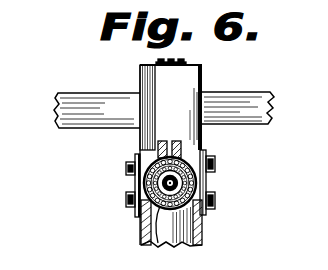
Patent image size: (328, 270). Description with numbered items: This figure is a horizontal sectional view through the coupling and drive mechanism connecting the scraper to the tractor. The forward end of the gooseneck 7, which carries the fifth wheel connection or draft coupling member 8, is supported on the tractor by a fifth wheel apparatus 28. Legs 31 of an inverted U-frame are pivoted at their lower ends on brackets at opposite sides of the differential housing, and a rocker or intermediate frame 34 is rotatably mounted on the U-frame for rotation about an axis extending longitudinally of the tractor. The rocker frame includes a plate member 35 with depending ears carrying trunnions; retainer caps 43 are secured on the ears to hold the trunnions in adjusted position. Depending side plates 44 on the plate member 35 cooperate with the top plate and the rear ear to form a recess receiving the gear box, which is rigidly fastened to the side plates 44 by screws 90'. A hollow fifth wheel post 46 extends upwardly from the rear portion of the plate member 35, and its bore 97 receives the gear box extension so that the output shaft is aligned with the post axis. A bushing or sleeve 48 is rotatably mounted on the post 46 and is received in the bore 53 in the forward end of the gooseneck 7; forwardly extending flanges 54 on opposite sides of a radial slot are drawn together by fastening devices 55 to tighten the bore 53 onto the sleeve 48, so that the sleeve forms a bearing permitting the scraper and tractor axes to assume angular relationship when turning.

The gooseneck 7 is at (204, 238).
The fifth wheel connection or draft coupling member 8 is at (138, 150).
The fifth wheel apparatus 28 is at (205, 150).
The legs 31 is at (252, 97).
The rocker or intermediate frame 34 is at (203, 69).
The plate member 35 is at (153, 88).
The retainer caps 43 is at (156, 63).
The depending side plates 44 is at (137, 177).
The hollow fifth wheel post 46 is at (214, 183).
The bushing or sleeve 48 is at (214, 203).
The bore 53 is at (142, 221).
The forwardly extending flanges 54 is at (166, 141).
The fastening devices 55 is at (157, 143).
The screws 90' is at (246, 182).
The bore 97 is at (173, 224).